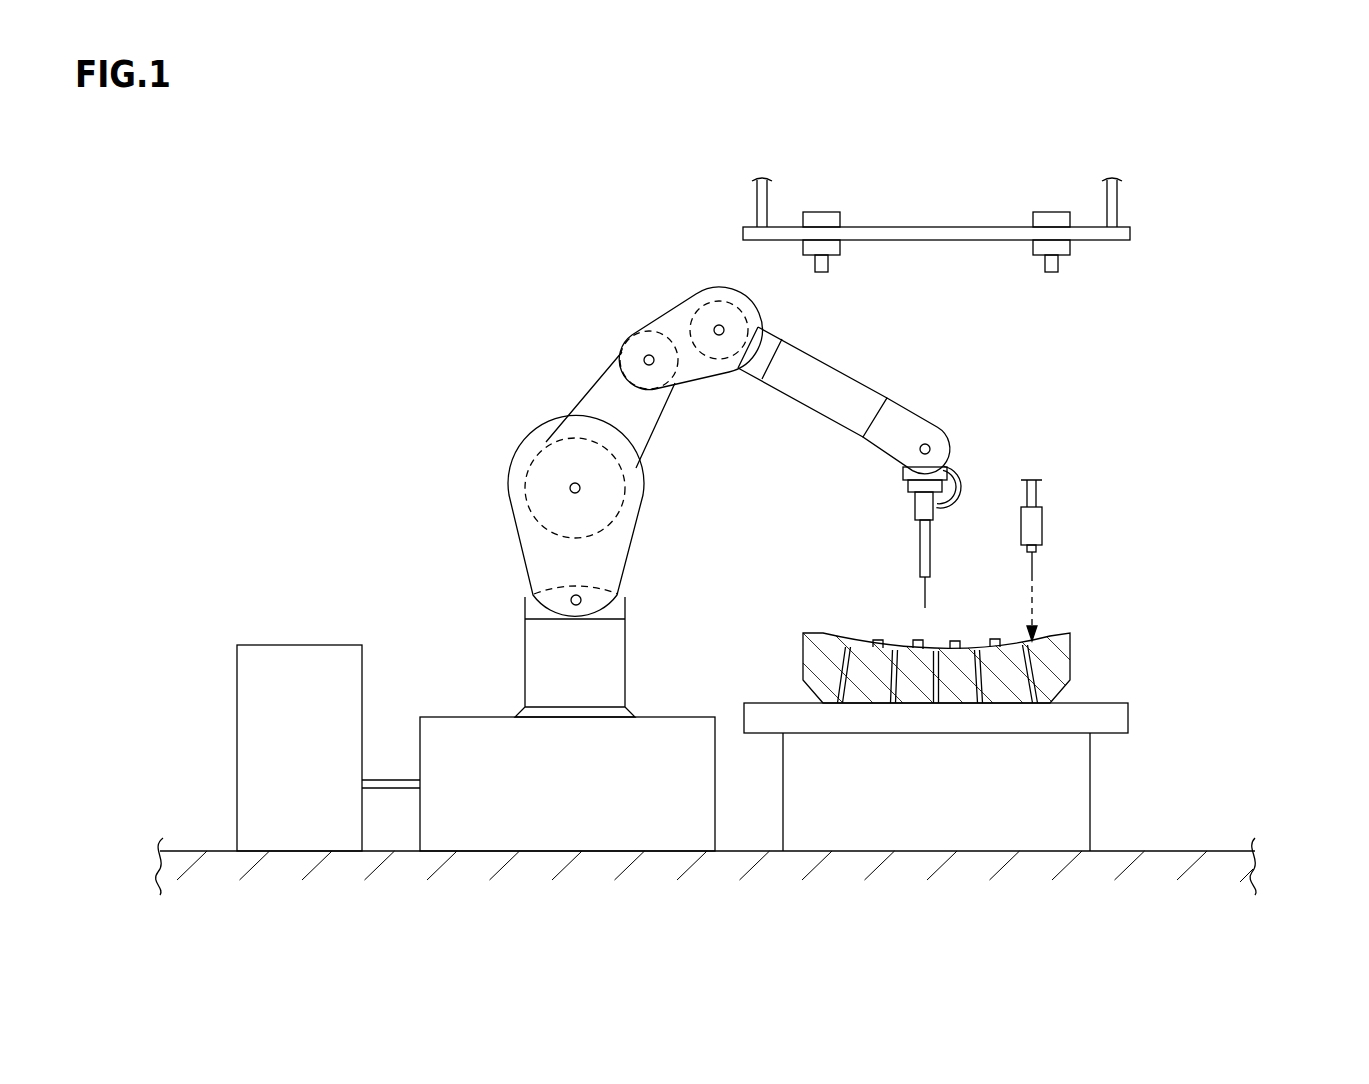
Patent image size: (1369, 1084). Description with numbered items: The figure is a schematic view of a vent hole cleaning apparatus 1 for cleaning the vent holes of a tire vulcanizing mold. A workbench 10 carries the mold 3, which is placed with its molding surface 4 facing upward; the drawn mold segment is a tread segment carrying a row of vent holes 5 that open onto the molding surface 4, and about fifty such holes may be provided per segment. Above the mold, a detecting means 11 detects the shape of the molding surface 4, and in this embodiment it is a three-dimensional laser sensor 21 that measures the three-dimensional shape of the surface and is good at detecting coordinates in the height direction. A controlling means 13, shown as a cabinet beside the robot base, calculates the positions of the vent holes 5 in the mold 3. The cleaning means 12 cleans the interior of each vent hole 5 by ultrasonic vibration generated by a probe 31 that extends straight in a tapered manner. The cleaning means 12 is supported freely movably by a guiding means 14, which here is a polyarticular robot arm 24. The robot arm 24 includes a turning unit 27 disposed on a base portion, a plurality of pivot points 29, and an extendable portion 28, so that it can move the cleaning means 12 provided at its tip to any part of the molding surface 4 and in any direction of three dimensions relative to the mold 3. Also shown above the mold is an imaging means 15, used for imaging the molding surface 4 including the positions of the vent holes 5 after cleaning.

The vent hole cleaning apparatus 1 is at (658, 303).
The mold 3 is at (967, 774).
The molding surface 4 is at (860, 628).
The vent holes 5 is at (842, 673).
The workbench 10 is at (1048, 785).
The detecting means 11 is at (1043, 517).
The cleaning means 12 is at (933, 537).
The controlling means 13 is at (297, 683).
The guiding means 14 is at (913, 412).
The imaging means 15 is at (1137, 208).
The 3D laser sensor 21 is at (1030, 533).
The polyarticular robot arm 24 is at (562, 388).
The turning unit 27 is at (573, 702).
The extendable portion 28 is at (830, 393).
The pivot points 29 is at (717, 330).
The probe 31 is at (928, 596).